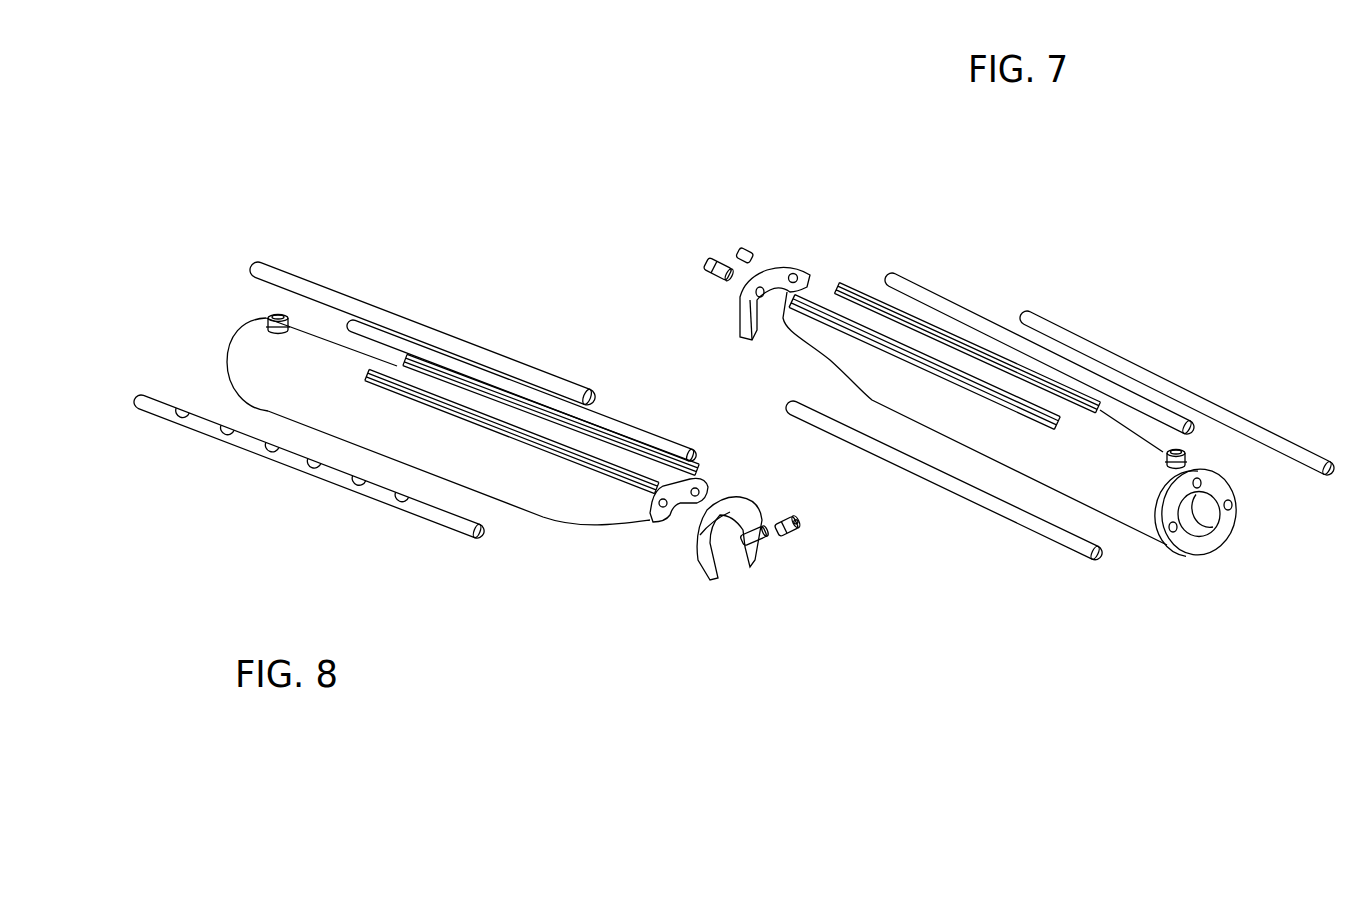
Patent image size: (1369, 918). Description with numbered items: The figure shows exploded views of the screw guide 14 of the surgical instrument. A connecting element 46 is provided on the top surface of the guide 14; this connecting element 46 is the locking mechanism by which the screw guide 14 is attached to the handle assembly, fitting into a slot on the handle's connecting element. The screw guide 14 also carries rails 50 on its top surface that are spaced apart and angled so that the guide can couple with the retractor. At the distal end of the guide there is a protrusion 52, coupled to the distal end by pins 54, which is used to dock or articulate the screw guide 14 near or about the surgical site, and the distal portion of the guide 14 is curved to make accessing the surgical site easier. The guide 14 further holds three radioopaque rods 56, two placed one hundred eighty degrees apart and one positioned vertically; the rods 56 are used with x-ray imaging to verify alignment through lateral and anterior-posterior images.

In FIG. 7, the screw guide 14 is at (1163, 248).
In FIG. 8, the connecting element 46 is at (268, 316).
In FIG. 7, the connecting element 46 is at (1171, 468).
In FIG. 8, the rails 50 is at (670, 456).
In FIG. 7, the rails 50 is at (838, 281).
In FIG. 8, the protrusion 52 is at (706, 556).
In FIG. 7, the protrusion 52 is at (782, 257).
In FIG. 8, the pins 54 is at (763, 543).
In FIG. 7, the pins 54 is at (742, 247).
In FIG. 8, the radioopaque rods 56 is at (284, 274).
In FIG. 7, the radioopaque rods 56 is at (899, 284).